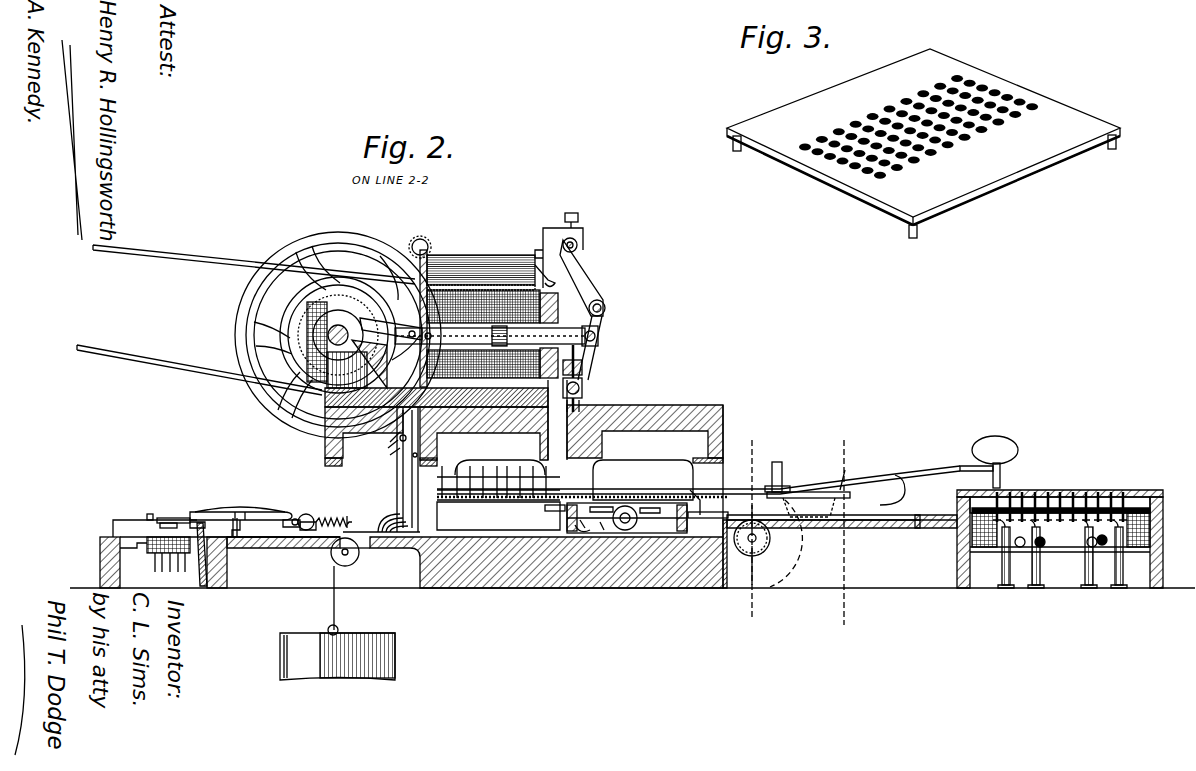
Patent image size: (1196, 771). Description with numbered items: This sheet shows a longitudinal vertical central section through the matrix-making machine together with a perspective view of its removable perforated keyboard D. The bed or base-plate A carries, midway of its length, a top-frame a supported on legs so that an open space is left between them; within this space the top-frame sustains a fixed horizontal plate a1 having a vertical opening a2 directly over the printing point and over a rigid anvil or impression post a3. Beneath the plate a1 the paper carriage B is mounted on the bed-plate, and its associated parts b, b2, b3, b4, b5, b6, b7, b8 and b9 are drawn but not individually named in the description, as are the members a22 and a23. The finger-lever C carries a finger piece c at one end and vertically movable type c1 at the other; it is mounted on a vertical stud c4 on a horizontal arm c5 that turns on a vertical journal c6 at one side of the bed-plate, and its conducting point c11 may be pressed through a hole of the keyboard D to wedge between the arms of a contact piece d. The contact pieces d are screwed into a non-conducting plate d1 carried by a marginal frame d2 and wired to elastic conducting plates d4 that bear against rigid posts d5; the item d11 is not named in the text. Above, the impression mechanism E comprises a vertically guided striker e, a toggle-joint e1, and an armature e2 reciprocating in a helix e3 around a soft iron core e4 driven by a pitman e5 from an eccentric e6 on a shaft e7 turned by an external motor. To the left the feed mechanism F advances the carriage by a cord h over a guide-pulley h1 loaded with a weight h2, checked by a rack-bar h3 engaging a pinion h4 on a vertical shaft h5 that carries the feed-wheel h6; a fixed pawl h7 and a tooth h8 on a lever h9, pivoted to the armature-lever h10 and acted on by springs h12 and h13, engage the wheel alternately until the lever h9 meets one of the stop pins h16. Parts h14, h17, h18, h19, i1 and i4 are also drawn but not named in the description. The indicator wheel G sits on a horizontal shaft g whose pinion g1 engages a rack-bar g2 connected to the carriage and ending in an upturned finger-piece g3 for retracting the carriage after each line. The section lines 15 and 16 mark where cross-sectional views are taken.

In FIG. 2, the bed or base-plate A is at (632, 551).
In FIG. 2, the top-frame a is at (524, 458).
In FIG. 2, the fixed horizontal plate a1 is at (660, 480).
In FIG. 2, the vertical opening a2 is at (957, 535).
In FIG. 2, the anvil or impression post a3 is at (590, 510).
In FIG. 2, the spring plate a22 is at (403, 476).
In FIG. 2, the rod a23 is at (390, 455).
In FIG. 2, the carriage B is at (640, 540).
In FIG. 2, the roller b is at (625, 530).
In FIG. 2, the stop b2 is at (552, 514).
In FIG. 2, the arm b3 is at (678, 508).
In FIG. 2, the bar b4 is at (617, 506).
In FIG. 2, the link b5 is at (712, 506).
In FIG. 2, the spring b6 is at (575, 525).
In FIG. 2, the pawl b7 is at (650, 515).
In FIG. 2, the pin b8 is at (583, 530).
In FIG. 2, the pin b9 is at (604, 532).
In FIG. 2, the lever C is at (698, 476).
In FIG. 2, the finger piece c is at (995, 462).
In FIG. 2, the type c1 is at (452, 500).
In FIG. 2, the vertical stud c4 is at (786, 464).
In FIG. 2, the horizontal arm c5 is at (808, 504).
In FIG. 2, the vertical journal c6 is at (835, 475).
In FIG. 2, the conducting point c11 is at (1003, 482).
In FIG. 2, the perforated plate or keyboard D is at (1063, 517).
In FIG. 3, the perforated plate or keyboard D is at (923, 143).
In FIG. 2, the contact piece d is at (1062, 497).
In FIG. 2, the supporting plate d1 is at (1068, 520).
In FIG. 2, the marginal supporting frame d2 is at (1163, 527).
In FIG. 2, the conducting plate d4 is at (1094, 548).
In FIG. 2, the conducting post d5 is at (1002, 573).
In FIG. 2, the roller d11 is at (1018, 536).
In FIG. 2, the impression mechanism E is at (574, 294).
In FIG. 2, the striker e is at (580, 410).
In FIG. 2, the toggle-joint e1 is at (606, 312).
In FIG. 2, the armature e2 is at (569, 336).
In FIG. 2, the helix e3 is at (548, 305).
In FIG. 2, the soft iron core e4 is at (490, 336).
In FIG. 2, the pitman e5 is at (391, 329).
In FIG. 2, the eccentric e6 is at (338, 335).
In FIG. 2, the shaft e7 is at (338, 335).
In FIG. 2, the feed mechanism F is at (155, 512).
In FIG. 2, the indicator wheel G is at (795, 566).
In FIG. 2, the horizontal shaft g is at (748, 548).
In FIG. 2, the pinion g1 is at (760, 545).
In FIG. 2, the rack-bar g2 is at (823, 513).
In FIG. 2, the upturned finger-piece g3 is at (905, 497).
In FIG. 2, the cord h is at (490, 540).
In FIG. 2, the guide-pulley h1 is at (350, 560).
In FIG. 2, the weight h2 is at (337, 623).
In FIG. 2, the rack-bar h3 is at (258, 542).
In FIG. 2, the pinion h4 is at (235, 540).
In FIG. 2, the vertical shaft h5 is at (258, 511).
In FIG. 2, the feed-wheel h6 is at (210, 511).
In FIG. 2, the fixed pawl h7 is at (296, 516).
In FIG. 2, the stop-tooth h8 is at (167, 529).
In FIG. 2, the stop-lever h9 is at (173, 509).
In FIG. 2, the armature-lever h10 is at (232, 509).
In FIG. 2, the spring h12 is at (191, 530).
In FIG. 2, the spring h13 is at (248, 505).
In FIG. 2, the bar h14 is at (139, 510).
In FIG. 2, the stop pins h16 is at (168, 561).
In FIG. 2, the spring h17 is at (322, 518).
In FIG. 2, the knob h18 is at (306, 530).
In FIG. 2, the wedge h19 is at (196, 522).
In FIG. 2, the roller i1 is at (520, 272).
In FIG. 2, the gear i4 is at (548, 279).
In FIG. 2, the section line 15 is at (760, 531).
In FIG. 2, the section line 16 is at (852, 532).